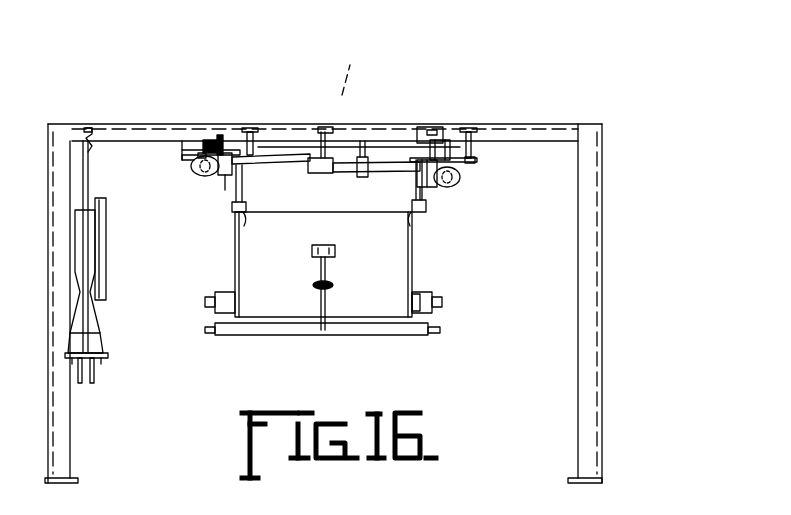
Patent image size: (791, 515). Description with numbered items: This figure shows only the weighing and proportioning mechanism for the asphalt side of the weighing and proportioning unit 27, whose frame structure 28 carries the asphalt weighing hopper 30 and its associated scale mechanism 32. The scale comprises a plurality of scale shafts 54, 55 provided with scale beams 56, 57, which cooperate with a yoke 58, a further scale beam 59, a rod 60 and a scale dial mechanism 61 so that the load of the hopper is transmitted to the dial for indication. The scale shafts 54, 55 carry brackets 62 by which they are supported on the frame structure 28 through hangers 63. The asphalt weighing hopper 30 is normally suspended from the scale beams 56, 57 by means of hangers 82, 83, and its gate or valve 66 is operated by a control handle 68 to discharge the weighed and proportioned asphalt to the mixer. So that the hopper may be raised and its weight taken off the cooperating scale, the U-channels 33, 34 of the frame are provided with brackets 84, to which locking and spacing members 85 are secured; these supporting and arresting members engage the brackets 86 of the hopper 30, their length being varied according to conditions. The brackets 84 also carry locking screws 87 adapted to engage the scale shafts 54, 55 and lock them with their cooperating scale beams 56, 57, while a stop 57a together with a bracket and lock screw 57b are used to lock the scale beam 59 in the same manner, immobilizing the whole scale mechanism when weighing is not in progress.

The weighing and proportioning unit 27 is at (597, 213).
The frame structure 28 is at (557, 135).
The asphalt weighing hopper 30 is at (397, 257).
The scale mechanism 32 is at (380, 157).
The U-channel 33 is at (472, 155).
The U-channel 34 is at (177, 142).
The scale shaft 54 is at (463, 188).
The scale shaft 55 is at (206, 178).
The scale beam 56 is at (390, 173).
The scale beam 57 is at (270, 166).
The stop 57a is at (94, 127).
The bracket and lock screw 57b is at (360, 63).
The yoke 58 is at (362, 137).
The scale beam 59 is at (297, 140).
The rod 60 is at (88, 187).
The scale dial mechanism 61 is at (93, 250).
The bracket 62 is at (457, 167).
The hanger 63 is at (216, 145).
The gate or valve 66 is at (420, 295).
The control handle 68 is at (323, 305).
The hanger 82 is at (427, 207).
The hanger 83 is at (222, 198).
The bracket 84 is at (197, 143).
The locking and spacing member 85 is at (230, 193).
The bracket 86 is at (237, 223).
The locking screw 87 is at (213, 155).